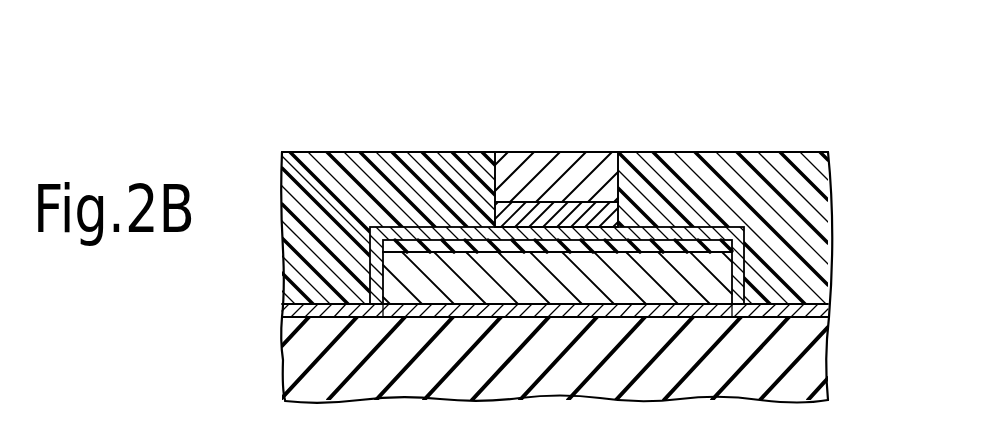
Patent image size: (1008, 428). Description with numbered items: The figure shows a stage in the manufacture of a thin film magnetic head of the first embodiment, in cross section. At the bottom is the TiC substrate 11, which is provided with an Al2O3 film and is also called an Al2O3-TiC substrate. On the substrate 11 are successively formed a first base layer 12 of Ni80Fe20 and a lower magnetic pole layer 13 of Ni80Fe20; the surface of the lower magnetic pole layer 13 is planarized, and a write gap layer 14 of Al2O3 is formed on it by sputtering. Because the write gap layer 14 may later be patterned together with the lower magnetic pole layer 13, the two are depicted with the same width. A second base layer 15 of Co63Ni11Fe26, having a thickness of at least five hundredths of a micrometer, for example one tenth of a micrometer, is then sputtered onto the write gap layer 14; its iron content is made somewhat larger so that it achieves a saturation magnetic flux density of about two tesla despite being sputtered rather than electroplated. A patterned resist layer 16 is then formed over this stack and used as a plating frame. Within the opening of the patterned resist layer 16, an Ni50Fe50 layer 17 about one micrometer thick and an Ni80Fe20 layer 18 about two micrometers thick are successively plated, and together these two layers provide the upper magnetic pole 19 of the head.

The TiC substrate 11 is at (812, 370).
The first base layer 12 is at (742, 302).
The lower magnetic pole layer 13 is at (715, 278).
The write gap layer 14 is at (708, 242).
The second base layer 15 is at (378, 244).
The patterned resist layer 16 is at (826, 184).
The Ni50Fe50 layer 17 is at (530, 208).
The Ni80Fe20 layer 18 is at (586, 174).
The upper magnetic pole 19 is at (605, 91).